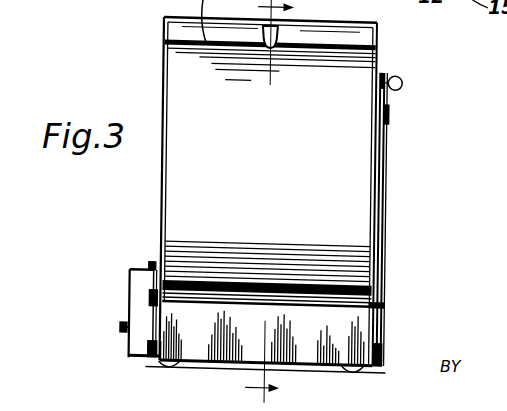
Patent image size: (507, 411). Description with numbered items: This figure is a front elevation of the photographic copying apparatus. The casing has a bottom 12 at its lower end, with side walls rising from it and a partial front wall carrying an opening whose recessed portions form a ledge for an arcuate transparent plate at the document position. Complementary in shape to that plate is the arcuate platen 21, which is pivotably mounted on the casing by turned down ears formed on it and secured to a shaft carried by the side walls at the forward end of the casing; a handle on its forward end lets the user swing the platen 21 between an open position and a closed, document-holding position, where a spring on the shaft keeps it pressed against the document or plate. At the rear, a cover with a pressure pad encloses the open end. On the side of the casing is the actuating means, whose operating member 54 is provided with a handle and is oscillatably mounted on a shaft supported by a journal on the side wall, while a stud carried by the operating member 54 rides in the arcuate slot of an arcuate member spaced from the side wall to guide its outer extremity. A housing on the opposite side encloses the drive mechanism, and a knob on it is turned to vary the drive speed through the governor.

The bottom 12 is at (207, 366).
The arcuate platen 21 is at (259, 151).
The operating member 54 is at (384, 143).